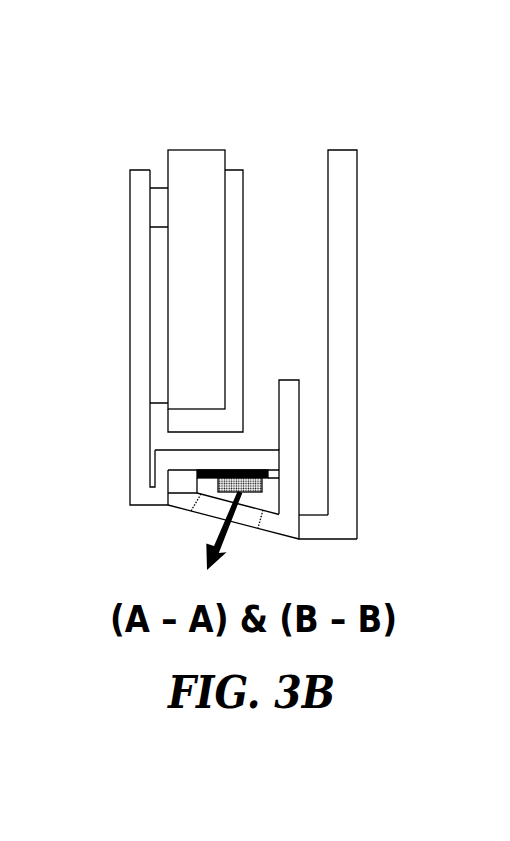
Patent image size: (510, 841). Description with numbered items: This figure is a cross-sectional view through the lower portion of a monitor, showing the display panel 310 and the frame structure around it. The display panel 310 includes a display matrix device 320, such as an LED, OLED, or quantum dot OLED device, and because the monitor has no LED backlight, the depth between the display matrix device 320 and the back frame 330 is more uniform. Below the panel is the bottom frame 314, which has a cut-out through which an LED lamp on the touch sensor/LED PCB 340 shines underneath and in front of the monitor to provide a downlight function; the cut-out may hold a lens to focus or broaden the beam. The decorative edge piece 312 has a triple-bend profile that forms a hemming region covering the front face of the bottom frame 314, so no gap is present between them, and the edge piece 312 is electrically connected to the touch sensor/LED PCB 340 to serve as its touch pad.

The display panel 310 is at (195, 63).
The decorative edge piece 312 is at (130, 182).
The bottom frame 314 is at (293, 538).
The display matrix device 320 is at (182, 150).
The back frame 330 is at (342, 150).
The touch sensor/LED PCB 340 is at (197, 480).